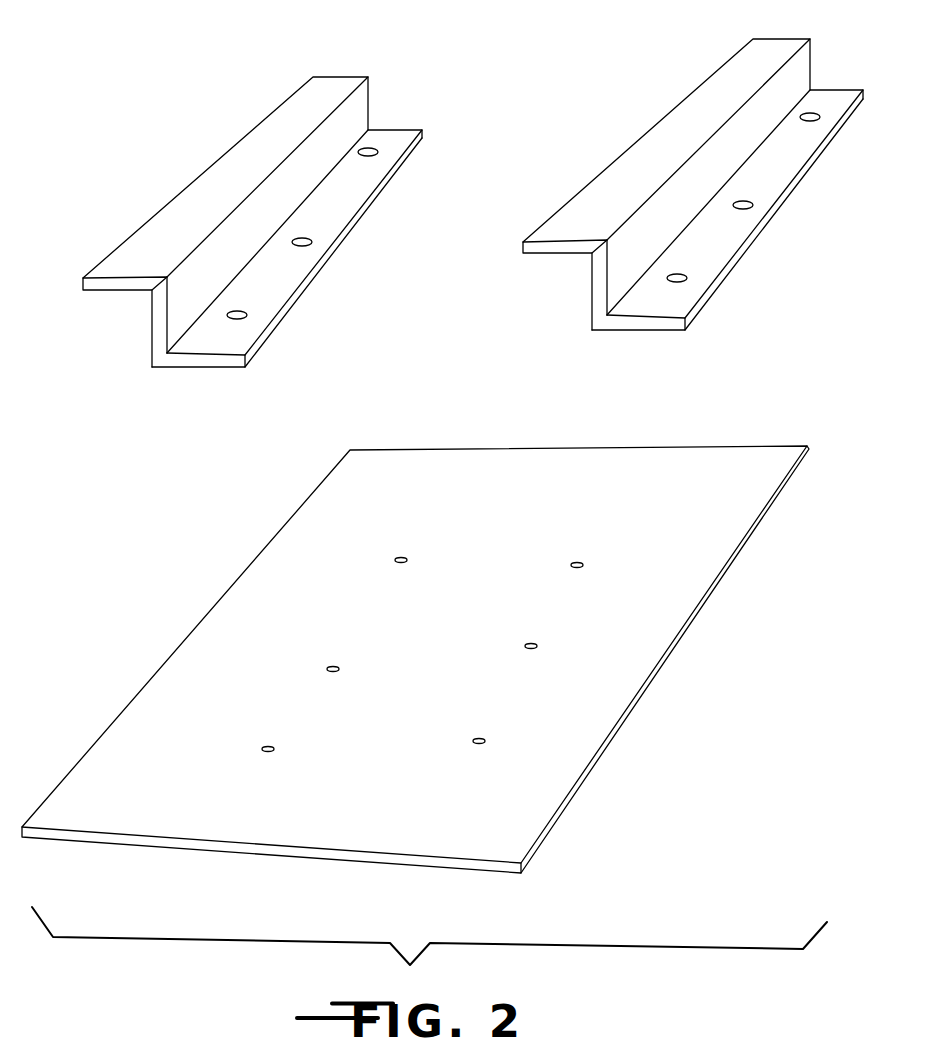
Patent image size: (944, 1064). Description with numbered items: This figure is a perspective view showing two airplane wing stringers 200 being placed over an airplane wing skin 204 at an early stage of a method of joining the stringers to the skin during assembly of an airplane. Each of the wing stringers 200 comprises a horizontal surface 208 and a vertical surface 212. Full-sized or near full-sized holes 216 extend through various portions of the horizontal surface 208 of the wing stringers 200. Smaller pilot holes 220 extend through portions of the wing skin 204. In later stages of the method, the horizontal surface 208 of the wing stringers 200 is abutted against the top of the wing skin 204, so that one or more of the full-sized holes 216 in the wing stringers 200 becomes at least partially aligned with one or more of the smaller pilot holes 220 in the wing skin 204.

The wing stringers 200 is at (217, 158).
The wing skin 204 is at (211, 608).
The horizontal surface 208 is at (212, 368).
The vertical surface 212 is at (150, 313).
The full-sized holes 216 is at (378, 152).
The pilot holes 220 is at (396, 557).